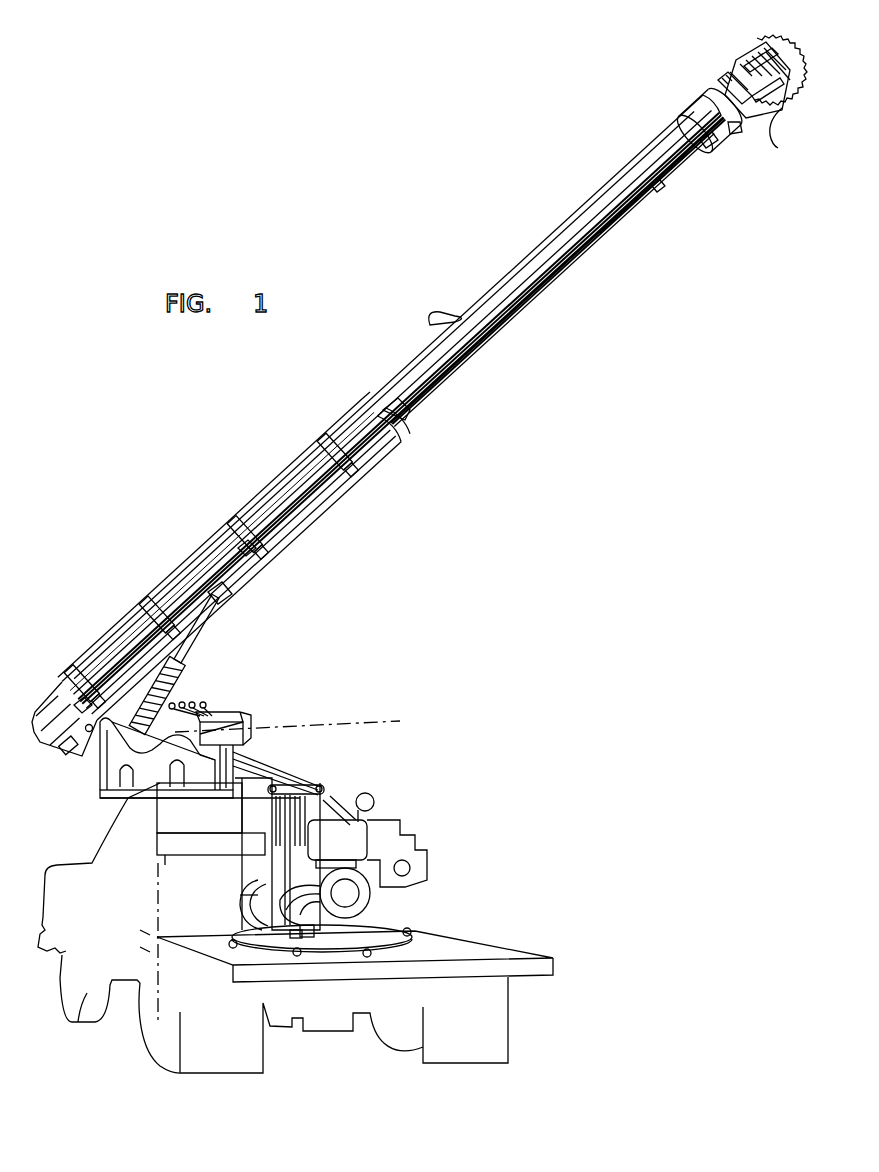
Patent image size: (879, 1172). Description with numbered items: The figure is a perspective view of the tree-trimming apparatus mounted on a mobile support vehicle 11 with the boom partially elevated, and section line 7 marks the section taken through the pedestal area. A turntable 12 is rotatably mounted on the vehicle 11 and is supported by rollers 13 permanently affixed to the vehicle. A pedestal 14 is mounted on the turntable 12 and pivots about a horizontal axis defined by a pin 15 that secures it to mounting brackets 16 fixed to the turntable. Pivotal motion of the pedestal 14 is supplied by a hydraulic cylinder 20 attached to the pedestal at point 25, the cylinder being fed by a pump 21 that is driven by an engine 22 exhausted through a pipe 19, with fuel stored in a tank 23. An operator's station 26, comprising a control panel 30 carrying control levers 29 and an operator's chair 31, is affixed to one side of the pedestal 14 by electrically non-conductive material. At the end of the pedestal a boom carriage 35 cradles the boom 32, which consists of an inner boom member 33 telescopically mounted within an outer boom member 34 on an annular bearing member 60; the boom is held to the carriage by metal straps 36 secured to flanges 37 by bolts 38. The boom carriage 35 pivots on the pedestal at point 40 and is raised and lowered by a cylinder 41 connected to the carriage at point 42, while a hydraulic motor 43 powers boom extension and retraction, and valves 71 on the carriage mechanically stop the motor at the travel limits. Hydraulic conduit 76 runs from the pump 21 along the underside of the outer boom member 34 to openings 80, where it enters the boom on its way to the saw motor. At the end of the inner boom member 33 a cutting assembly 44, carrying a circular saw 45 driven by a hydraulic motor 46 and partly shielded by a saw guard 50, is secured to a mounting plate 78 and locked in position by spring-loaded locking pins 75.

The section line 7- 7 is at (398, 721).
The mobile support vehicle 11 is at (547, 954).
The turntable 12 is at (230, 928).
The rollers 13 is at (233, 943).
The pedestal 14 is at (262, 849).
The pin 15 is at (293, 937).
The mounting brackets 16 is at (300, 932).
The pipe 19 is at (377, 797).
The hydraulic cylinder 20 is at (323, 810).
The pump 21 is at (310, 878).
The engine 22 is at (413, 845).
The tank 23 is at (348, 851).
The point 25 is at (326, 784).
The operator's station 26 is at (250, 704).
The control levers 29 is at (178, 702).
The control panel 30 is at (232, 712).
The operator's chair 31 is at (107, 780).
The boom 32 is at (536, 362).
The inner boom member 33 is at (688, 107).
The outer boom member 34 is at (533, 250).
The boom carriage 35 is at (310, 527).
The metal straps 36 is at (320, 440).
The flanges 37 is at (243, 547).
The bolts 38 is at (240, 552).
The point 40 is at (90, 735).
The cylinder 41 is at (180, 680).
The point 42 is at (175, 662).
The hydraulic motor 43 is at (70, 753).
The cutting assembly 44 is at (740, 58).
The circular saw 45 is at (777, 40).
The hydraulic motor 46 is at (763, 57).
The saw guard 50 is at (772, 113).
The bearing member 60 is at (710, 150).
The valves 71 is at (70, 730).
The locking pins 75 is at (732, 133).
The hydraulic conduit 76 is at (380, 458).
The mounting plate 78 is at (718, 80).
The openings 80 is at (683, 178).